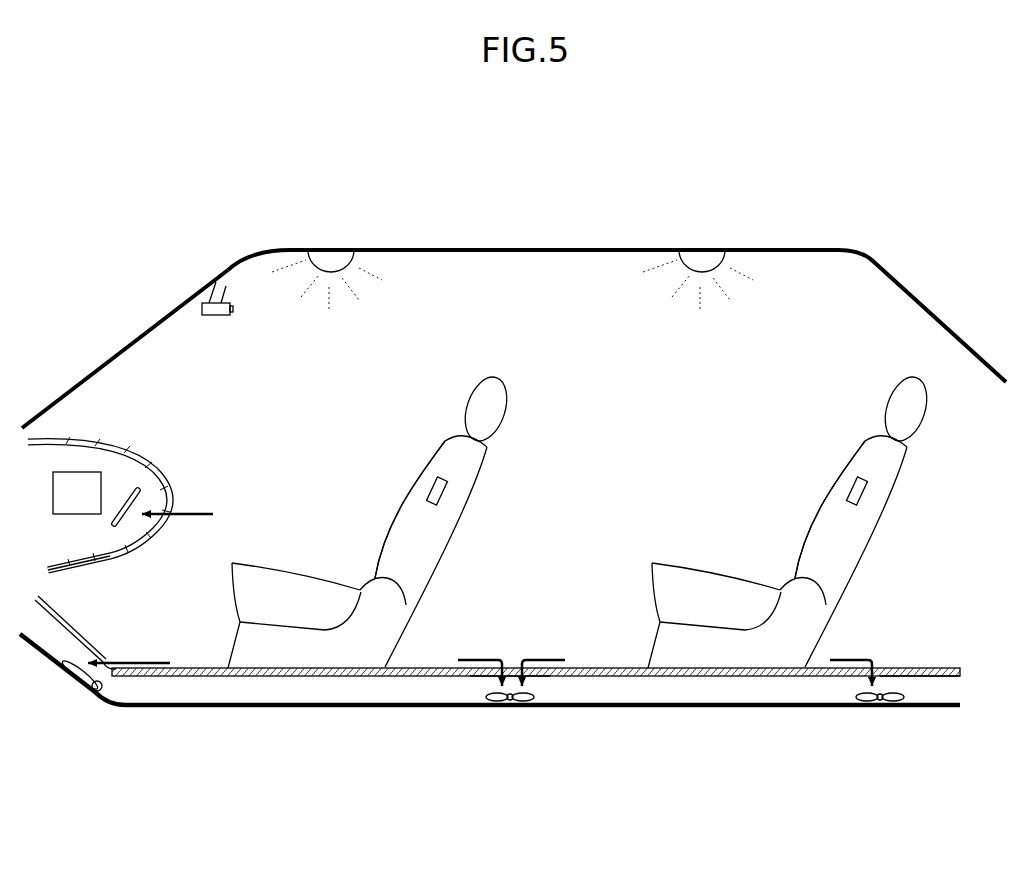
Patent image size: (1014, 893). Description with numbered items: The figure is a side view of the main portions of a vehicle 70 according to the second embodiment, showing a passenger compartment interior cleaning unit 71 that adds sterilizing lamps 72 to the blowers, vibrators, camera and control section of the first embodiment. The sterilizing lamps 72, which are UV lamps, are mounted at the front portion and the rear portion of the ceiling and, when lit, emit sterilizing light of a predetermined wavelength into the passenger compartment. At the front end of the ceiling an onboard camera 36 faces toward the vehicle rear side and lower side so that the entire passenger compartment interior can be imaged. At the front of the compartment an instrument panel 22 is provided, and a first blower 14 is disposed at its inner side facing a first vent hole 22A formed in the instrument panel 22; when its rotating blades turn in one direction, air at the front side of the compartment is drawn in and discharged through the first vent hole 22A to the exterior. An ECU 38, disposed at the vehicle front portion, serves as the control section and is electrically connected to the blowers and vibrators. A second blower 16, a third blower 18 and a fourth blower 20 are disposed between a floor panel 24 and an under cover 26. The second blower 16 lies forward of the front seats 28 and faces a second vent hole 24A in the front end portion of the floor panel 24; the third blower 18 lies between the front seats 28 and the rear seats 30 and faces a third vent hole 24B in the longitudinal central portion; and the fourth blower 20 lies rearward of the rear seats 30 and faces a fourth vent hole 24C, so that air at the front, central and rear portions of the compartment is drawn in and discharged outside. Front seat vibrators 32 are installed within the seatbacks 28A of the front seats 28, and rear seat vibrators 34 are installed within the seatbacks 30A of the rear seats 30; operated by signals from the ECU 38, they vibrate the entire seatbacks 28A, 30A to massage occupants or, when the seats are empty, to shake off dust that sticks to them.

The vehicle 70 is at (852, 188).
The passenger compartment interior cleaning unit 71 is at (108, 282).
The sterilizing lamps 72 is at (355, 263).
The onboard camera 36 is at (226, 301).
The ECU 38 is at (76, 470).
The first blower 14 is at (130, 489).
The instrument panel 22 is at (162, 461).
The first vent hole 22A is at (150, 535).
The front seats 28 is at (452, 436).
The seatbacks 28A is at (413, 497).
The front seat vibrators 32 is at (446, 501).
The rear seats 30 is at (872, 436).
The seatbacks 30A is at (833, 497).
The rear seat vibrators 34 is at (866, 501).
The floor panel 24 is at (602, 665).
The second vent hole 24A is at (112, 678).
The third vent hole 24B is at (533, 678).
The fourth vent hole 24C is at (905, 670).
The under cover 26 is at (382, 708).
The second blower 16 is at (103, 703).
The third blower 18 is at (487, 690).
The fourth blower 20 is at (900, 690).